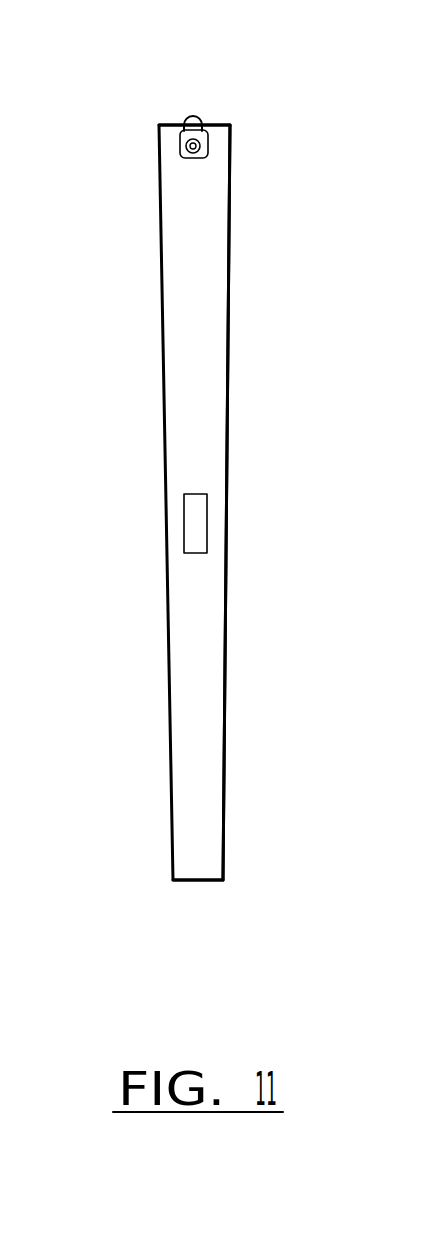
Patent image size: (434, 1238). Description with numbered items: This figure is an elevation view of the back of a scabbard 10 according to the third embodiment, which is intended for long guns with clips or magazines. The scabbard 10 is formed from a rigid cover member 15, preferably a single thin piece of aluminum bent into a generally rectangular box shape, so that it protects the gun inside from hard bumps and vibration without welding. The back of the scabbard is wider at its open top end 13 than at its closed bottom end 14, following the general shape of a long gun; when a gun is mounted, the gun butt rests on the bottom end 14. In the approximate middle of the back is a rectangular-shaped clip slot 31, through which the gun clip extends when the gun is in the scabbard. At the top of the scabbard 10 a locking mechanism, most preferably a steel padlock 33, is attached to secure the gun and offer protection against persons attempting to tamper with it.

The scabbard 10 is at (228, 235).
The open top end 13 is at (217, 122).
The bottom end 14 is at (200, 880).
The cover member 15 is at (227, 405).
The clip slot 31 is at (207, 533).
The padlock 33 is at (187, 120).